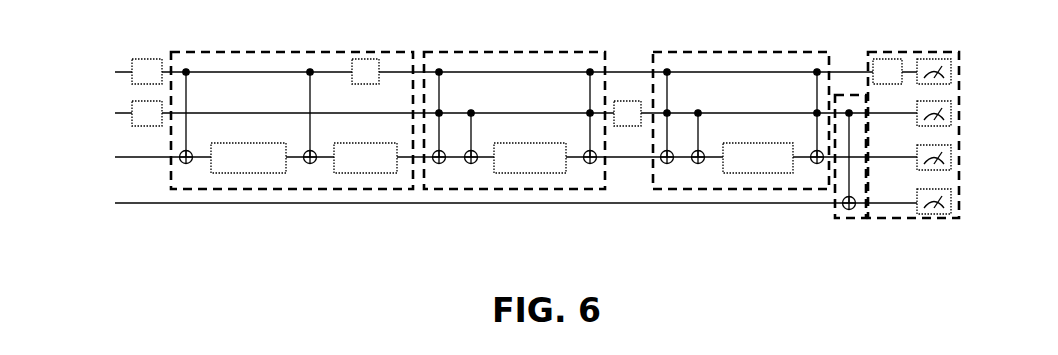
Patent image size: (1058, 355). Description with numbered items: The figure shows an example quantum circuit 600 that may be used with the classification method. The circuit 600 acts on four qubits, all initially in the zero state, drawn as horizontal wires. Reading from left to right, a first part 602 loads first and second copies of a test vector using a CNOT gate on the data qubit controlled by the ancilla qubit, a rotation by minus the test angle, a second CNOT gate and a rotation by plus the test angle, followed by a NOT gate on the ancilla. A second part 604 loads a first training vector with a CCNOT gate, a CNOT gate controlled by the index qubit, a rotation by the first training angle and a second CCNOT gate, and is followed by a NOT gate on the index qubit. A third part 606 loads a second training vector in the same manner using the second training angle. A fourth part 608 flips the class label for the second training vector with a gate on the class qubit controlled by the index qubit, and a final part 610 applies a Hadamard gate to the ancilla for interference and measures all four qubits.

The quantum circuit 600 is at (502, 142).
The first part 602 is at (300, 52).
The second part 604 is at (538, 52).
The third part 606 is at (777, 51).
The fourth part 608 is at (845, 219).
The fourth part for interference and measurement 610 is at (905, 51).